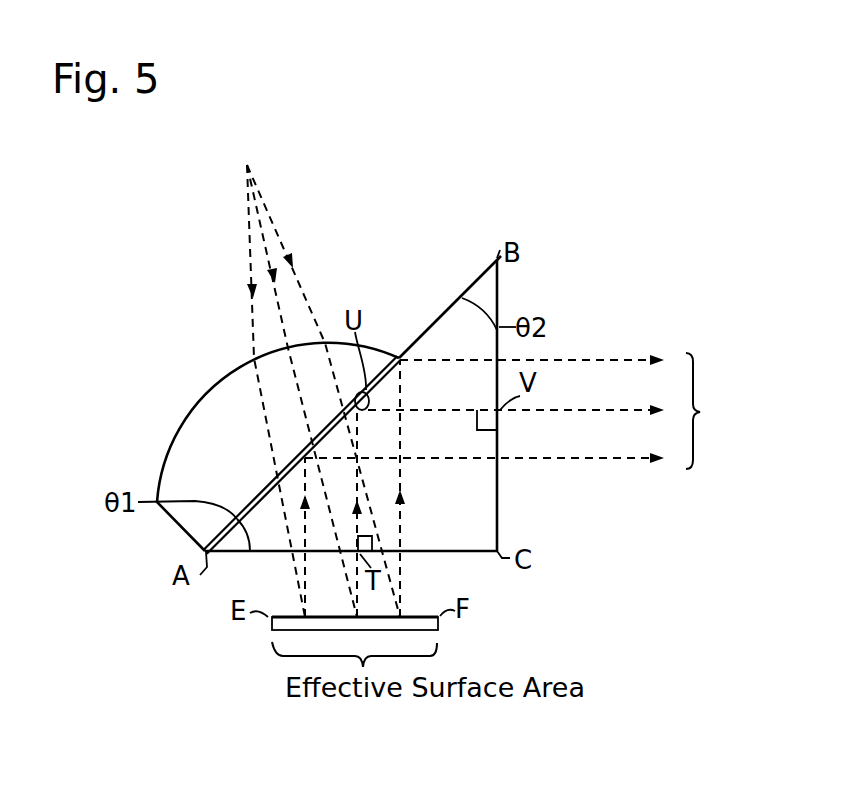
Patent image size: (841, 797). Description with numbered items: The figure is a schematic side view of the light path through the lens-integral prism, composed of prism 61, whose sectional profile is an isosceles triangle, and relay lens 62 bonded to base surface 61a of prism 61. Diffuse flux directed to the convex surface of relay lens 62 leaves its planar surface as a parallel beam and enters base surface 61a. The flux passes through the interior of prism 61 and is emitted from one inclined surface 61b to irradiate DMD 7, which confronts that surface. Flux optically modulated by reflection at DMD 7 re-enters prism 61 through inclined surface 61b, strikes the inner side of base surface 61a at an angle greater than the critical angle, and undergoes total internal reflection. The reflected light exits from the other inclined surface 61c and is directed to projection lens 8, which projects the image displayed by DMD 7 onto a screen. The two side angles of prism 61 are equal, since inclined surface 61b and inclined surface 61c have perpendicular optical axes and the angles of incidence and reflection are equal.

The prism 61 is at (410, 407).
The base surface 61a is at (425, 332).
The inclined surface 61b is at (467, 552).
The inclined surface 61c is at (497, 511).
The relay lens 62 is at (186, 426).
The DMD 7 is at (293, 625).
The projection lens 8 is at (521, 411).